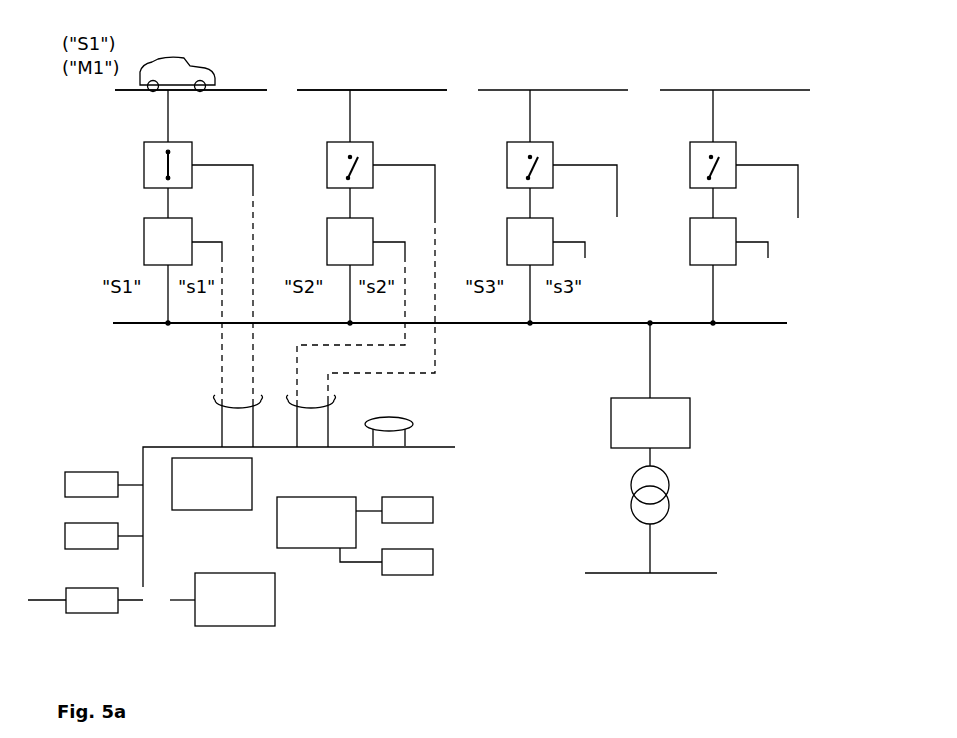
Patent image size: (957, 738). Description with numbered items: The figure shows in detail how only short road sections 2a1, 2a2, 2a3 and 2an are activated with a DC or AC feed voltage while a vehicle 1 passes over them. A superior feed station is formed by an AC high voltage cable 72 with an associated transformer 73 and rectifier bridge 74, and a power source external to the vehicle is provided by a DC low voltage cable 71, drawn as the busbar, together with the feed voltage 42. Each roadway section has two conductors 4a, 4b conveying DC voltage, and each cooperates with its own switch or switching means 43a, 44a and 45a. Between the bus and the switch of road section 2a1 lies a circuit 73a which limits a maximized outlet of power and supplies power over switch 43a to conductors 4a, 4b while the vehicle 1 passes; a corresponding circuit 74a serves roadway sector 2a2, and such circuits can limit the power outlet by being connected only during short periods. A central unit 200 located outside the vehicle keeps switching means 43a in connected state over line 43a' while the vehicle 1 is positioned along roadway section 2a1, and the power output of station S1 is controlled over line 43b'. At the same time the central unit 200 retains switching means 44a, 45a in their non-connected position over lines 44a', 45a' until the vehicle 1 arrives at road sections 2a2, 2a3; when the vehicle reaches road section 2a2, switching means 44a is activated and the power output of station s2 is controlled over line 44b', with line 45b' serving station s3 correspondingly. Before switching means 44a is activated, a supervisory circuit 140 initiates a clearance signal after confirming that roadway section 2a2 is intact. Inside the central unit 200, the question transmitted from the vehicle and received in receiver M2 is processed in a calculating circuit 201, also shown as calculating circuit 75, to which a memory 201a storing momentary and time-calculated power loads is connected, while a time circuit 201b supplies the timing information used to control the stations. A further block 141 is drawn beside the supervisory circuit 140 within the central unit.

The vehicle 1 is at (183, 67).
The roadway section 2a1 is at (191, 213).
The roadway section 2a2 is at (382, 230).
The roadway section 2a3 is at (497, 250).
The roadway section 2an is at (736, 189).
The conductor 4a is at (140, 91).
The conductor 4b is at (372, 79).
The switch or switching means 43a is at (137, 180).
The line 43a' is at (234, 290).
The line 43b' is at (210, 315).
The switching means 44a is at (330, 176).
The line 44a' is at (366, 291).
The line 44b' is at (338, 321).
The switching means 45a is at (510, 229).
The line 45a' is at (585, 177).
The line 45b' is at (593, 253).
The circuit limiting outlet of power 73a is at (144, 270).
The circuit 74a is at (327, 270).
The DC low voltage cable 71 is at (152, 324).
The DC or AC feed voltage 42 is at (678, 324).
The rectifier bridge 74 is at (666, 432).
The transformer 73 is at (667, 519).
The AC high voltage cable 72 is at (665, 570).
The central unit 200 is at (141, 445).
The calculating circuit 75 is at (226, 493).
The calculating circuit 201 is at (340, 532).
The memory 201a is at (421, 510).
The time circuit 201b is at (414, 562).
The supervisory circuit 140 is at (85, 615).
The communication module 141 is at (257, 611).